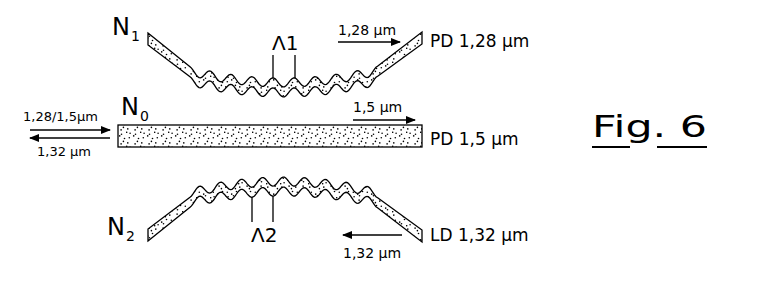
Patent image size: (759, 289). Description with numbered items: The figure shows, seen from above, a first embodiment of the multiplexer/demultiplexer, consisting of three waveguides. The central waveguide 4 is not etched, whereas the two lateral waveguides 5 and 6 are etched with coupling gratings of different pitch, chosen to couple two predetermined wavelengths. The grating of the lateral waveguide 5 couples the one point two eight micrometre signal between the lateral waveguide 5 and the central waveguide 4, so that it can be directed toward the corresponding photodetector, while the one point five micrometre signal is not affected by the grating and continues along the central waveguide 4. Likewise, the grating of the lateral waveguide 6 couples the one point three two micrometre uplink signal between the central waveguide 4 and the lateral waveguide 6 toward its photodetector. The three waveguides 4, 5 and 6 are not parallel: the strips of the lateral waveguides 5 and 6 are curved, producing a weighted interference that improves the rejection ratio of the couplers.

The central waveguide 4 is at (163, 147).
The lateral waveguide 5 is at (166, 50).
The lateral waveguide 6 is at (163, 221).